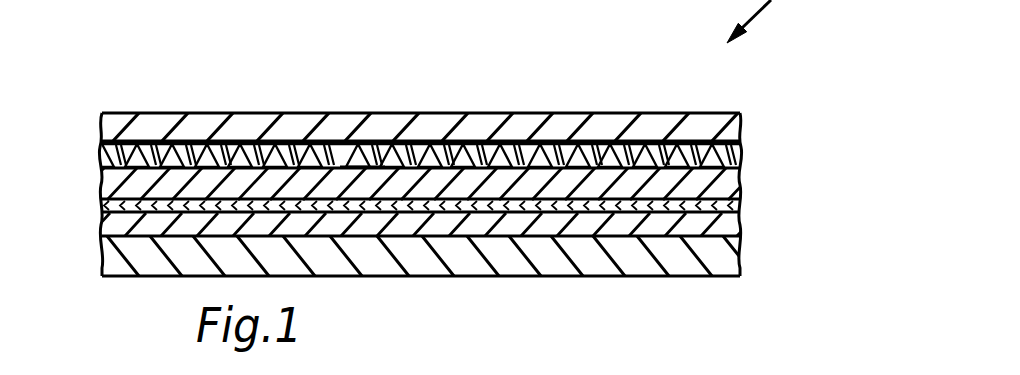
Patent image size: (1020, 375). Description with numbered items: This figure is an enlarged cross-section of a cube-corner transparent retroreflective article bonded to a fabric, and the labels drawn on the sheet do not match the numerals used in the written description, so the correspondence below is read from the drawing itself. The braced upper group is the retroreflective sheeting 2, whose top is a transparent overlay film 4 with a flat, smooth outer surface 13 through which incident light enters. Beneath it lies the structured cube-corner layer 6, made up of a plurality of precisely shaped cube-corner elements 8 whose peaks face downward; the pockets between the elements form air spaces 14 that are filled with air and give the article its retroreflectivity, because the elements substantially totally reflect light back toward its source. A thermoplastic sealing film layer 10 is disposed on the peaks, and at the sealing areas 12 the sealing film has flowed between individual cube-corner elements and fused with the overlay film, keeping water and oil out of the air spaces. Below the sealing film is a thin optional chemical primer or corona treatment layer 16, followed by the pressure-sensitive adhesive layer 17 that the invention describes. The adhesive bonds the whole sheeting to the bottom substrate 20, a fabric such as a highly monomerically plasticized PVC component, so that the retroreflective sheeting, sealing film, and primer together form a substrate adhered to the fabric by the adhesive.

The retroreflective sheeting 2 is at (66, 113).
The cover layer 4 is at (150, 118).
The cube-corner layer 6 is at (746, 141).
The cube-corner elements 8 is at (598, 140).
The body layer 10 is at (104, 179).
The base surface 12 is at (362, 145).
The front surface 13 is at (460, 120).
The air interface regions 14 is at (292, 132).
The adhesive layer 16 is at (738, 205).
The intermediate layer 17 is at (735, 222).
The substrate 20 is at (110, 262).